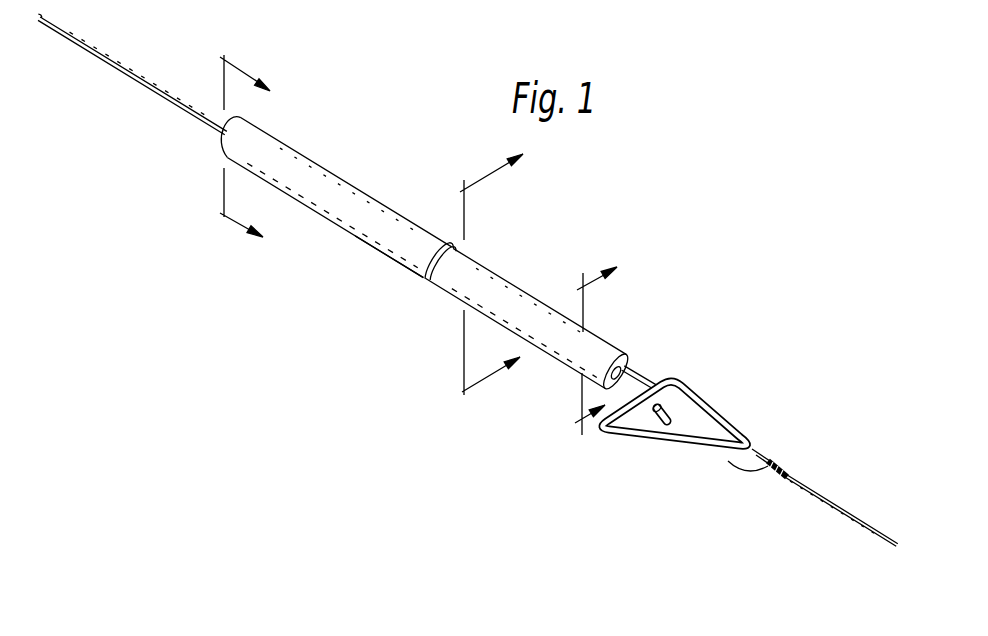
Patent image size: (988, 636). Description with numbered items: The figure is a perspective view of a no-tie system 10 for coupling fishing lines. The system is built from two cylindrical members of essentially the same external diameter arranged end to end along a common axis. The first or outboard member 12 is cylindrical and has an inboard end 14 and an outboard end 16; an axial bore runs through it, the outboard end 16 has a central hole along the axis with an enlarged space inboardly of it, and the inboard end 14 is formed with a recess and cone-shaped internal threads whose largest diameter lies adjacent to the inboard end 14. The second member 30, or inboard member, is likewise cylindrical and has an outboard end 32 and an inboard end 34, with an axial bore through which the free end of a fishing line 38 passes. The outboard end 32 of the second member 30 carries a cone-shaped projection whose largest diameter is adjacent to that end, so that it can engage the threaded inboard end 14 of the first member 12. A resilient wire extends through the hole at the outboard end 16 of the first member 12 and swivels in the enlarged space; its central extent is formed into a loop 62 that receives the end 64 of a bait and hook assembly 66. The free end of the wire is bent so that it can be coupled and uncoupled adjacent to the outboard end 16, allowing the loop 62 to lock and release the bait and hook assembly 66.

The no-tie system for coupling fishing lines 10 is at (373, 170).
The first or outboard member 12 is at (500, 273).
The inboard end 14 is at (453, 282).
The outboard end 16 is at (632, 356).
The second member 30 is at (353, 212).
The outboard end 32 is at (407, 265).
The inboard end 34 is at (242, 118).
The fishing line 38 is at (115, 63).
The loop 62 is at (722, 461).
The end of bait and hook assembly 64 is at (755, 451).
The bait and hook assembly 66 is at (848, 510).